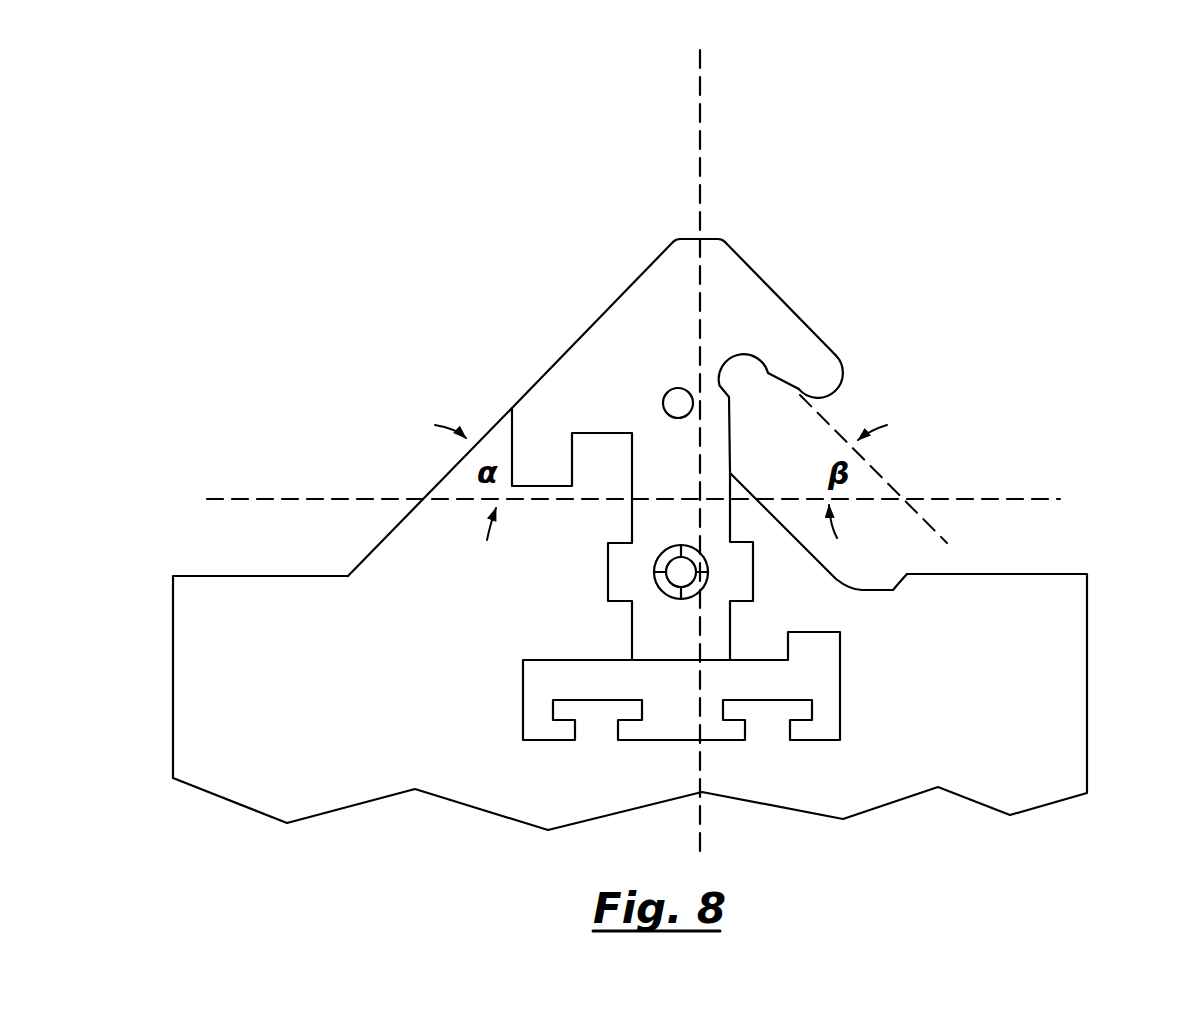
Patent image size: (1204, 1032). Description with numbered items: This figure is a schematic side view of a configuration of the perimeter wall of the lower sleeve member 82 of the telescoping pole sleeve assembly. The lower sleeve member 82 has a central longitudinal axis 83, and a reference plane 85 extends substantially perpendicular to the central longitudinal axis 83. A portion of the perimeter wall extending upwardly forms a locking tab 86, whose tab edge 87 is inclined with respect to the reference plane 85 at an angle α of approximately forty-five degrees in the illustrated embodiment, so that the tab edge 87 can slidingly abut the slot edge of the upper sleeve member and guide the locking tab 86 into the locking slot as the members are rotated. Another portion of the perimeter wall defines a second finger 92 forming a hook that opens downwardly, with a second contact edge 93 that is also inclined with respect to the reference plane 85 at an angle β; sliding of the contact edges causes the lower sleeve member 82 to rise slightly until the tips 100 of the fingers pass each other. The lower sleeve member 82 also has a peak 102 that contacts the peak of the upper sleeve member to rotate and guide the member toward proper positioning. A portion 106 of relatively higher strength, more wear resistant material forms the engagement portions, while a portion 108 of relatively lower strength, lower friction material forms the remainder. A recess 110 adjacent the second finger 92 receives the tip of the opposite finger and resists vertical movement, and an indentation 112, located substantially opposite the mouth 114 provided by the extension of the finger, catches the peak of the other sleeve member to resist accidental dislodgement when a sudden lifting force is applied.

The lower sleeve member 82 is at (490, 287).
The central longitudinal axis 83 is at (702, 131).
The reference plane 85 is at (350, 500).
The locking tab 86 is at (653, 287).
The tab edge 87 is at (550, 372).
The second finger 92 is at (775, 332).
The second contact edge 93 is at (770, 376).
The tips of the fingers 100 is at (835, 395).
The peak 102 is at (708, 237).
The portion of relatively higher strength material 106 is at (842, 666).
The portion of relatively lower strength material 108 is at (1047, 707).
The recess 110 is at (720, 365).
The indentation 112 is at (877, 587).
The mouth 114 is at (760, 398).